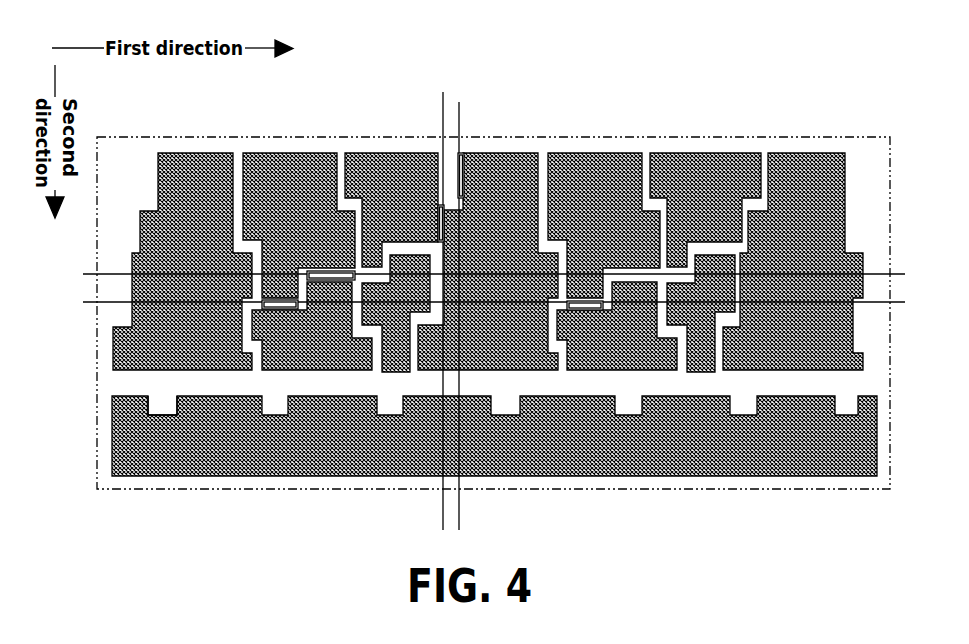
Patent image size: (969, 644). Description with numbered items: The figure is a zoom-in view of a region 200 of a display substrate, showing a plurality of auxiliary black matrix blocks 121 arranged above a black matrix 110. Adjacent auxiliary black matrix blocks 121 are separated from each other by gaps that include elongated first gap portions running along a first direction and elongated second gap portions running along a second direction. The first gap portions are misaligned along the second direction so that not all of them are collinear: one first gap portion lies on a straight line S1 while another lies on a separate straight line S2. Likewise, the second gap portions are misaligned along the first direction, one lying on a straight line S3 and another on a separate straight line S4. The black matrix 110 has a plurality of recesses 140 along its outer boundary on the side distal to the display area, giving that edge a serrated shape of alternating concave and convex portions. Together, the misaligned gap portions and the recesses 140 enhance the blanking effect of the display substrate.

The region 200 is at (603, 137).
The black matrix 110 is at (185, 455).
The auxiliary black matrix blocks 121 is at (770, 347).
The recesses 140 is at (148, 396).
The straight line S1 is at (472, 302).
The straight line S2 is at (472, 274).
The straight line S3 is at (477, 303).
The straight line S4 is at (426, 299).